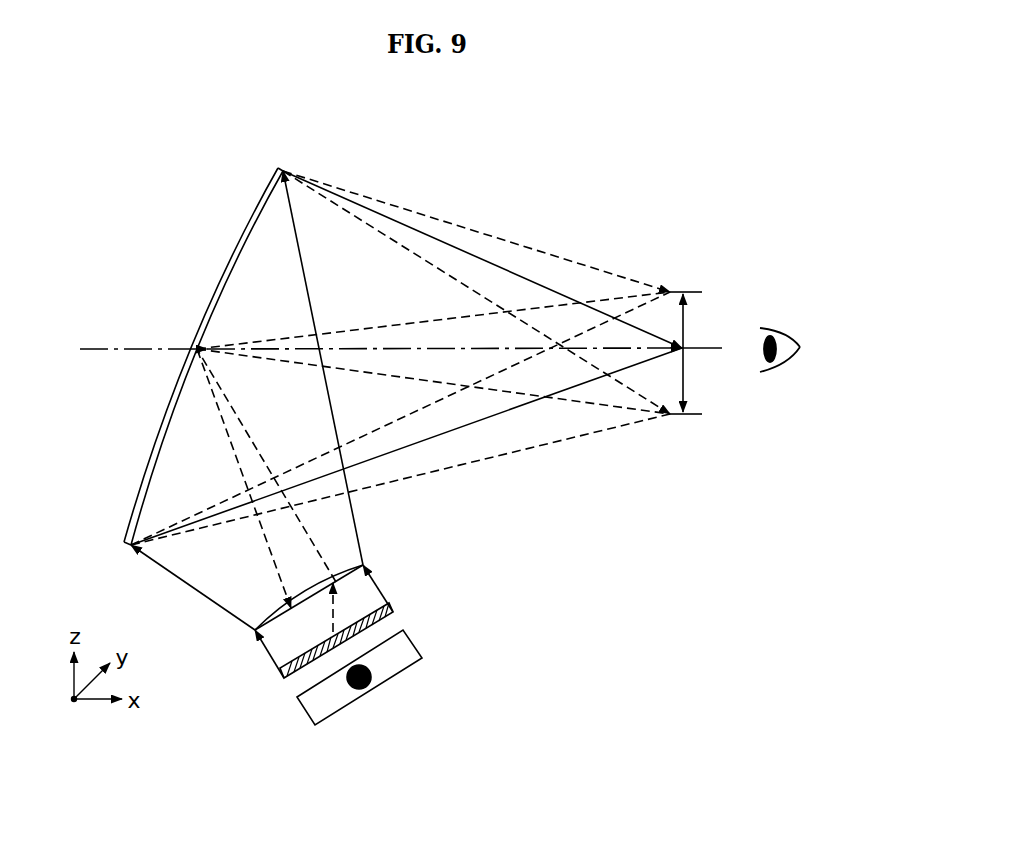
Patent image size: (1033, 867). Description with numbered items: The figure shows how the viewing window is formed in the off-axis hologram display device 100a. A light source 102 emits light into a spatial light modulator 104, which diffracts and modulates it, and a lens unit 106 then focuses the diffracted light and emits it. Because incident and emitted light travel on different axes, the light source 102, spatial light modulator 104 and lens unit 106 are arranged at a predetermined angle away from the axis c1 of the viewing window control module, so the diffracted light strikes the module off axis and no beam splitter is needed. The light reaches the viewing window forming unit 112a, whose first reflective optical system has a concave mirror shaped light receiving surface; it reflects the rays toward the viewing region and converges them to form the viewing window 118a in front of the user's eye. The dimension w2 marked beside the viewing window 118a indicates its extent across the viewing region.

The hologram display device 100a is at (640, 196).
The viewing window forming unit 112a is at (233, 250).
The viewing window 118a is at (683, 291).
The lens unit 106 is at (356, 578).
The spatial light modulator 104 is at (391, 604).
The light source 102 is at (410, 635).
The axis of the viewing window control module c1 is at (90, 348).
The eye box width w2 is at (699, 353).